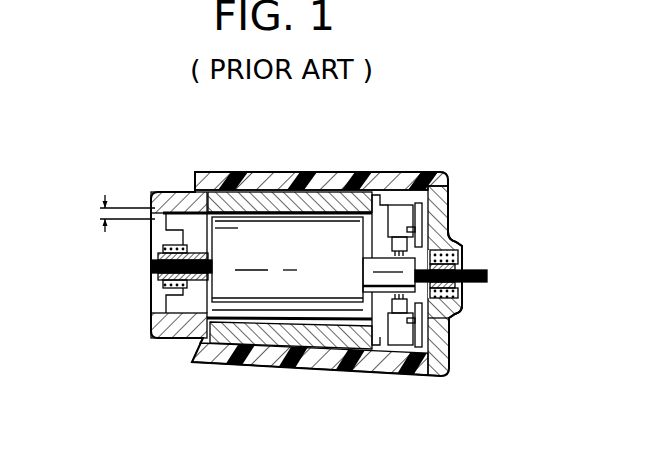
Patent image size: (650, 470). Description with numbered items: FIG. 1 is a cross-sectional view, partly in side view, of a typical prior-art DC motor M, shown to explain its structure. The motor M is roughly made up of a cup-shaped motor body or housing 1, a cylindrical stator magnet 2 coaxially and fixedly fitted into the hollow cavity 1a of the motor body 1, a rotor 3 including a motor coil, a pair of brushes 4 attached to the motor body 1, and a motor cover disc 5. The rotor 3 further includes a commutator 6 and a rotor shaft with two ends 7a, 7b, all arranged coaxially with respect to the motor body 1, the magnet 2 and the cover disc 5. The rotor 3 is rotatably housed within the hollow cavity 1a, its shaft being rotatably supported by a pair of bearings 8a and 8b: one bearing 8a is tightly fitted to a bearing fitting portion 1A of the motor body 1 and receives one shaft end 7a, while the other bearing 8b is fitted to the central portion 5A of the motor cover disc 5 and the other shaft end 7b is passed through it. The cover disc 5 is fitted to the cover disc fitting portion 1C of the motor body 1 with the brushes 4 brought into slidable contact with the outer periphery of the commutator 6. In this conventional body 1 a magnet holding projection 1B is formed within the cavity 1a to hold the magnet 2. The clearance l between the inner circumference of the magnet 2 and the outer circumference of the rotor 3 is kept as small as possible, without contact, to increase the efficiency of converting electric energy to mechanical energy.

The DC motor M is at (406, 166).
The motor body 1 is at (298, 171).
The hollow cavity 1a is at (258, 192).
The bearing fitting portion 1A is at (150, 238).
The magnet holding projection 1B is at (371, 191).
The cover disc fitting portion 1C is at (450, 183).
The stator magnet 2 is at (325, 340).
The rotor 3 is at (260, 306).
The brushes 4 is at (403, 253).
The motor cover disc 5 is at (453, 337).
The central portion of motor cover disc 5A is at (447, 247).
The commutator 6 is at (457, 307).
The rotor shaft end 7a is at (150, 270).
The rotor shaft end 7b is at (477, 283).
The bearing 8a is at (150, 290).
The bearing 8b is at (442, 262).
The clearance l is at (120, 213).